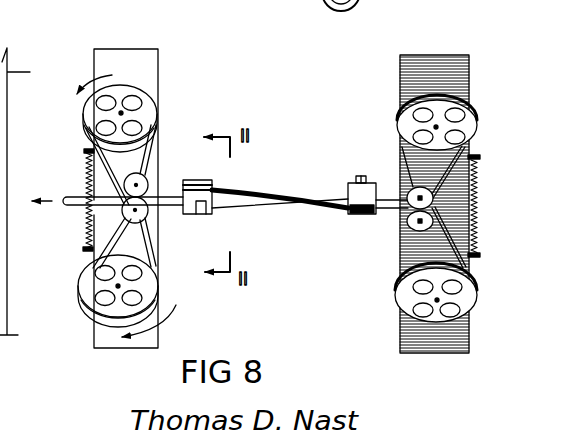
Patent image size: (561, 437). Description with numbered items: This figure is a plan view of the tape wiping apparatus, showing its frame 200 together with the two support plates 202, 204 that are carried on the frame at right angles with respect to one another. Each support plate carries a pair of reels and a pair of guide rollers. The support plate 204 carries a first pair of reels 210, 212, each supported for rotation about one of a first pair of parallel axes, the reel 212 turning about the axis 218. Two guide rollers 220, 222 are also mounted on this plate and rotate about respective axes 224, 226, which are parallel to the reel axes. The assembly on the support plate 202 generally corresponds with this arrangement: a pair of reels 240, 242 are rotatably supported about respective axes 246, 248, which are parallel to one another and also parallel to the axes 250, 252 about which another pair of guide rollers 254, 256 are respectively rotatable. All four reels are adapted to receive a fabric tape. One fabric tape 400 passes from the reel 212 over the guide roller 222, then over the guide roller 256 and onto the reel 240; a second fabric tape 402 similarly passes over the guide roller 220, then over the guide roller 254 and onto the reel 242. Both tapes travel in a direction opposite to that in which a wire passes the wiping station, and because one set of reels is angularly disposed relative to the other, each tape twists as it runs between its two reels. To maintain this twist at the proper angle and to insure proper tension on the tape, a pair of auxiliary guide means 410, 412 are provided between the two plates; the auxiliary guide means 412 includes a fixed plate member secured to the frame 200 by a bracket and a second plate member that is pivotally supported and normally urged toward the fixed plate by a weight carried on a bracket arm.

The frame 200 is at (13, 262).
The support plate 202 is at (389, 106).
The support plate 204 is at (173, 85).
The reel 210 is at (93, 296).
The reel 212 is at (88, 113).
The axis 218 is at (130, 112).
The guide roller 220 is at (143, 213).
The guide roller 222 is at (143, 182).
The axis 224 is at (151, 250).
The axis 226 is at (145, 178).
The reel 240 is at (475, 110).
The reel 242 is at (472, 313).
The axis 246 is at (436, 127).
The axis 248 is at (437, 303).
The axis 250 is at (413, 223).
The axis 252 is at (407, 187).
The guide roller 254 is at (405, 222).
The guide roller 256 is at (398, 187).
The fabric tape 400 is at (107, 162).
The fabric tape 402 is at (91, 250).
The auxiliary guide means 410 is at (223, 185).
The auxiliary guide means 412 is at (336, 212).